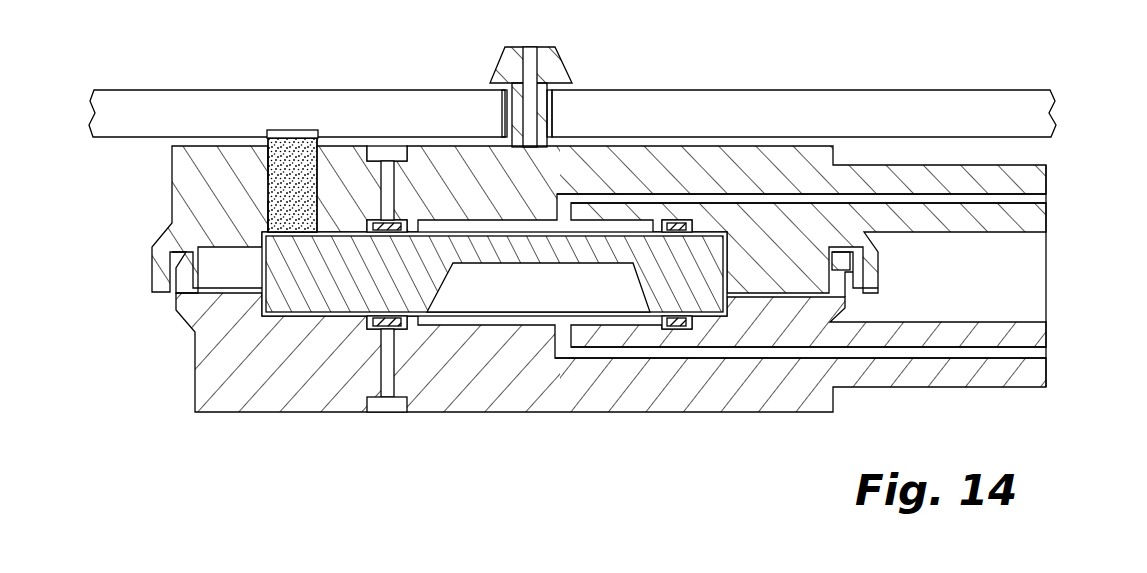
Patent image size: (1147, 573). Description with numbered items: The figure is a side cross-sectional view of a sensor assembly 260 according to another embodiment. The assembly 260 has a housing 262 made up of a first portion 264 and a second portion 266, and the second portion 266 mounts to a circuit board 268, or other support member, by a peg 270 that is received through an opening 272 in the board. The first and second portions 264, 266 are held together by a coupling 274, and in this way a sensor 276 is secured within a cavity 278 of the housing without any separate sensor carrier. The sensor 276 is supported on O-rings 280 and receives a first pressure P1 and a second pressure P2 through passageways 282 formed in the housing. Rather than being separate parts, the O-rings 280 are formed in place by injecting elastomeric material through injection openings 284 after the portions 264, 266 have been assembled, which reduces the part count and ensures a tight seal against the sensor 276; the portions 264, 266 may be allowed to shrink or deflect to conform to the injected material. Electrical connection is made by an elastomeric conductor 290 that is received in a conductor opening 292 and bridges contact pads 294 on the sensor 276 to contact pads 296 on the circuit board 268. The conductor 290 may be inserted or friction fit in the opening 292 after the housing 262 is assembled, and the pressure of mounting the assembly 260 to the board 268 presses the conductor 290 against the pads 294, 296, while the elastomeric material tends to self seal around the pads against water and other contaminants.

The sensor assembly 260 is at (604, 295).
The housing 262 is at (565, 321).
The first portion 264 is at (242, 417).
The second portion 266 is at (173, 203).
The circuit board 268 is at (944, 100).
The peg 270 is at (561, 56).
The opening 272 is at (553, 120).
The coupling 274 is at (171, 298).
The sensor 276 is at (494, 345).
The cavity 278 is at (497, 292).
The O-rings 280 is at (400, 222).
The passageways 282 is at (1053, 227).
The injection openings 284 is at (388, 155).
The elastomeric conductor 290 is at (303, 172).
The conductor opening 292 is at (267, 163).
The contact pads 294 is at (267, 226).
The contact pads 296 is at (267, 133).
The pressure P1 is at (1051, 196).
The pressure P2 is at (1051, 352).